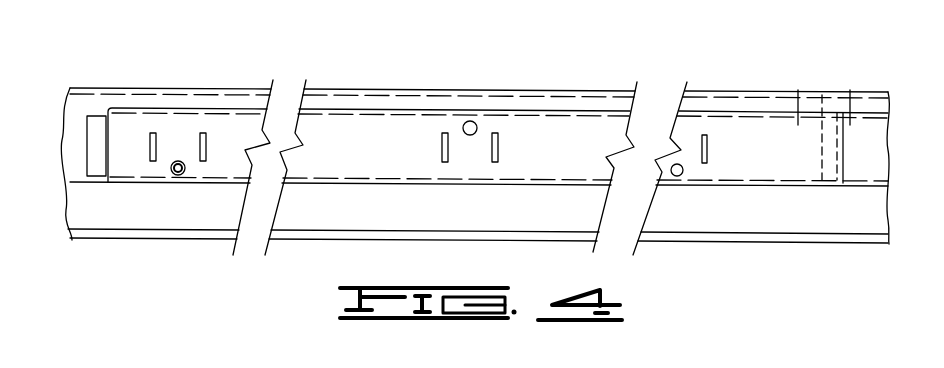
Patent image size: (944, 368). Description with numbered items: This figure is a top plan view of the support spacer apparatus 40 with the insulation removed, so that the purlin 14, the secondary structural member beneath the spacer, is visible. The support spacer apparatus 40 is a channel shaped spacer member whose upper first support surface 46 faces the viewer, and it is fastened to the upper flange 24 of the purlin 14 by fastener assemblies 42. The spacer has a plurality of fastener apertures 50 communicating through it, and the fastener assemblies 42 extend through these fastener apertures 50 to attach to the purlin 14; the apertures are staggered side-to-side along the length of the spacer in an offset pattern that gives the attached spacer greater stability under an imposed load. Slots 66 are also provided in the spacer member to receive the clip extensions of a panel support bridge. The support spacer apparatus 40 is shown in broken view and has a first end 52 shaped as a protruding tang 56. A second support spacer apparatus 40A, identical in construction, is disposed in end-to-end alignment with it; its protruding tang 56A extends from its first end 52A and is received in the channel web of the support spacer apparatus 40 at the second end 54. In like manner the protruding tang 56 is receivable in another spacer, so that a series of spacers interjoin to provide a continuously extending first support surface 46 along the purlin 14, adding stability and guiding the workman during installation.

The purlin 14 is at (312, 250).
The upper flange 24 is at (178, 217).
The support spacer apparatus 40 is at (161, 104).
The fastener assembly 42 is at (180, 160).
The first support surface 46 is at (385, 159).
The fastener aperture 50 is at (472, 136).
The first end 52 is at (118, 112).
The second end 54 is at (798, 92).
The protruding tang 56 is at (97, 115).
The slot 66 is at (150, 145).
The second support spacer apparatus 40A is at (857, 122).
The first end 52A is at (850, 90).
The protruding tang 56A is at (822, 95).